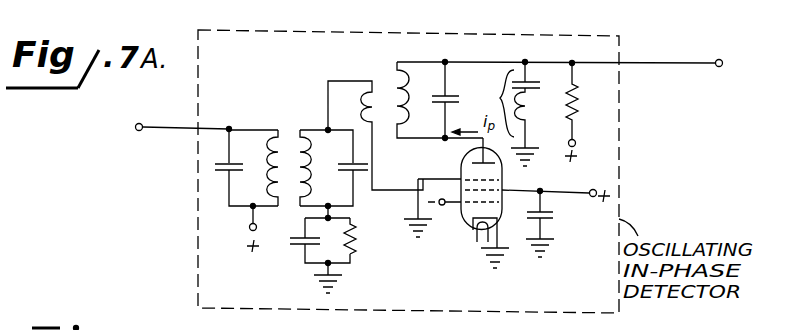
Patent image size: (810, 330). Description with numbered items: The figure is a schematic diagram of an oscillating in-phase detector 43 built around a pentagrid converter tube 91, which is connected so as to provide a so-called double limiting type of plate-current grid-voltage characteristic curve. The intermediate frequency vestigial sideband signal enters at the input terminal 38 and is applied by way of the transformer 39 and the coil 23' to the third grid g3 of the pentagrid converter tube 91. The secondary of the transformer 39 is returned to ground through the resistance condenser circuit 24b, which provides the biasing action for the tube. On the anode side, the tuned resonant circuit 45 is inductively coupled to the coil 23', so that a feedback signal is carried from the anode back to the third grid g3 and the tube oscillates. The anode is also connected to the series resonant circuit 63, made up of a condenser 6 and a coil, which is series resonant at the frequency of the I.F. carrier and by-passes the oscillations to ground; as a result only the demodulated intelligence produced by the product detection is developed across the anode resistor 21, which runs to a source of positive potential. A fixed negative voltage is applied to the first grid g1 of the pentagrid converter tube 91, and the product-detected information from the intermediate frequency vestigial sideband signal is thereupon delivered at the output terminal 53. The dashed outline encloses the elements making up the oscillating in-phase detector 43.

The input terminal 38 is at (139, 125).
The transformer 39 is at (310, 115).
The resistance condenser circuit 24b is at (327, 247).
The coil 23' is at (405, 143).
The tuned resonant circuit 45 is at (423, 85).
The capacitor 6 is at (507, 113).
The series resonant circuit 63 is at (507, 113).
The anode resistor 21 is at (576, 103).
The output terminal 53 is at (720, 60).
The oscillating in-phase detector 43 is at (619, 161).
The pentagrid converter tube 91 is at (467, 228).
The third grid g3 is at (472, 186).
The first grid g1 is at (496, 205).